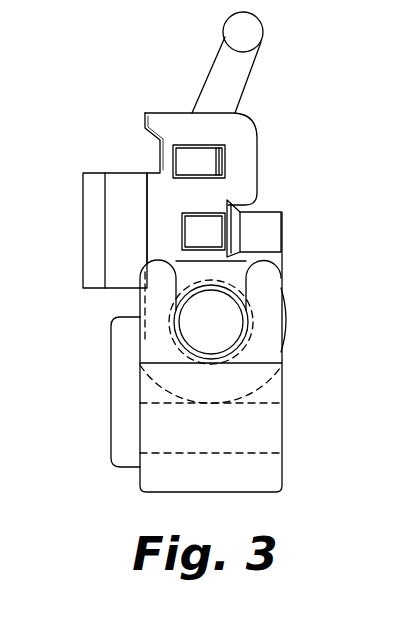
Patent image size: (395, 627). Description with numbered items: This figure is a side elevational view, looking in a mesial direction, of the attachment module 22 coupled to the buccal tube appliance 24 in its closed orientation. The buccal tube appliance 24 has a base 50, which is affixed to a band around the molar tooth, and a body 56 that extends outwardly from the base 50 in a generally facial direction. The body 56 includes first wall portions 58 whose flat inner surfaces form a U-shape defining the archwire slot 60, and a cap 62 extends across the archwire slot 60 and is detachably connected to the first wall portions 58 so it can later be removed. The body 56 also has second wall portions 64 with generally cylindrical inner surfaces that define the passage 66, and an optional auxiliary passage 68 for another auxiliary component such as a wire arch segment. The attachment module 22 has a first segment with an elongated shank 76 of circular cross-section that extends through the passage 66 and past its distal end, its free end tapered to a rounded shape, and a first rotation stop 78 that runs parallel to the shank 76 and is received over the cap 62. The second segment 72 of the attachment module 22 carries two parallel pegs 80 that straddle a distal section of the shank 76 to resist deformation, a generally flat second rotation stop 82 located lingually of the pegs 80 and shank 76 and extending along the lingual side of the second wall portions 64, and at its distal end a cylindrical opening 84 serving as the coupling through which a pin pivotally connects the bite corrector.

The attachment module 22 is at (294, 498).
The buccal tube appliance 24 is at (146, 102).
The base 50 is at (83, 210).
The body 56 is at (266, 167).
The first wall portions 58 is at (193, 195).
The archwire slot 60 is at (197, 220).
The cap 62 is at (222, 222).
The second wall portions 64 is at (287, 313).
The passage 66 is at (225, 303).
The auxiliary passage 68 is at (212, 160).
The second segment 72 is at (133, 493).
The shank 76 is at (193, 325).
The first rotation stop 78 is at (268, 213).
The pegs 80 is at (160, 280).
The second rotation stop 82 is at (118, 440).
The cylindrical opening 84 is at (235, 452).